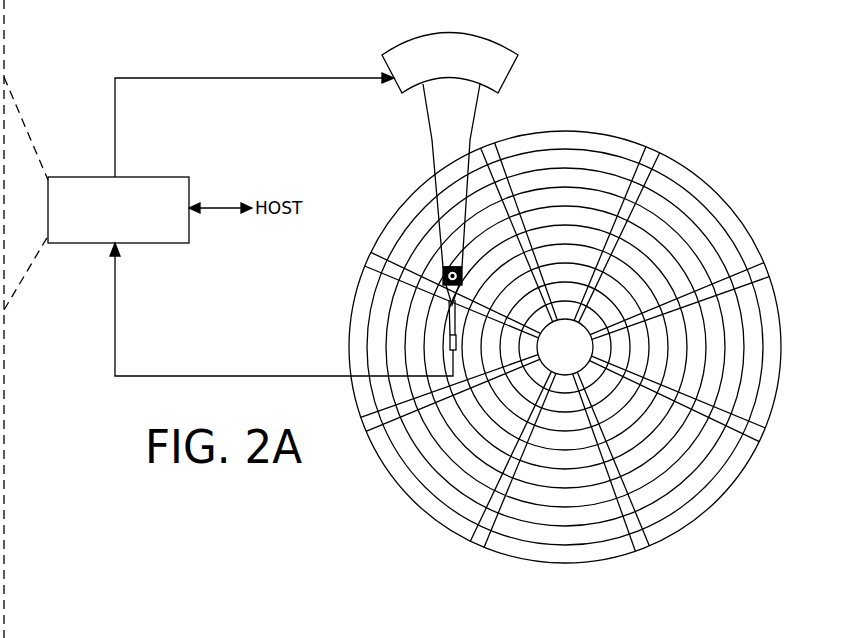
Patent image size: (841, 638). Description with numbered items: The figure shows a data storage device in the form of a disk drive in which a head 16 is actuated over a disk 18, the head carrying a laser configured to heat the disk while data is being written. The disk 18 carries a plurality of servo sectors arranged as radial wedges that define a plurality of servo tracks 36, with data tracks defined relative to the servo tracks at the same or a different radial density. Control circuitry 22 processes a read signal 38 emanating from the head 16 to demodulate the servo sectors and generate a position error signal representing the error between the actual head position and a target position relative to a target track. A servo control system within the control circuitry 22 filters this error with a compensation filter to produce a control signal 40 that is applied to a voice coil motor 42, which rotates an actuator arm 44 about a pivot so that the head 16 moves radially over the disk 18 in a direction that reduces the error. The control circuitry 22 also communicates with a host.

The head 16 is at (448, 343).
The disk 18 is at (565, 325).
The control circuitry 22 is at (155, 177).
The servo track 36 is at (548, 160).
The read signal 38 is at (268, 376).
The control signal 40 is at (115, 112).
The voice coil motor 42 is at (402, 93).
The actuator arm 44 is at (433, 145).